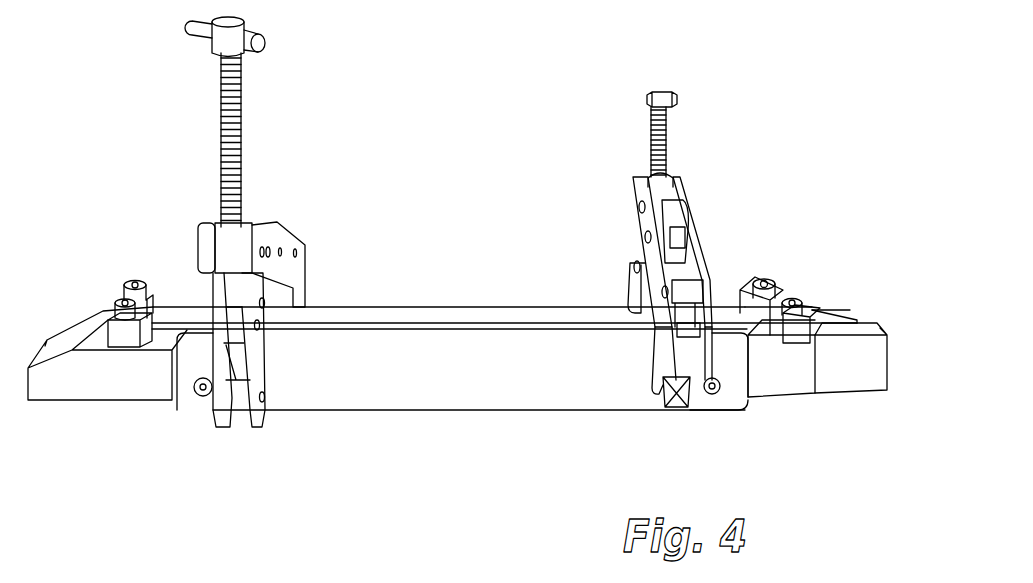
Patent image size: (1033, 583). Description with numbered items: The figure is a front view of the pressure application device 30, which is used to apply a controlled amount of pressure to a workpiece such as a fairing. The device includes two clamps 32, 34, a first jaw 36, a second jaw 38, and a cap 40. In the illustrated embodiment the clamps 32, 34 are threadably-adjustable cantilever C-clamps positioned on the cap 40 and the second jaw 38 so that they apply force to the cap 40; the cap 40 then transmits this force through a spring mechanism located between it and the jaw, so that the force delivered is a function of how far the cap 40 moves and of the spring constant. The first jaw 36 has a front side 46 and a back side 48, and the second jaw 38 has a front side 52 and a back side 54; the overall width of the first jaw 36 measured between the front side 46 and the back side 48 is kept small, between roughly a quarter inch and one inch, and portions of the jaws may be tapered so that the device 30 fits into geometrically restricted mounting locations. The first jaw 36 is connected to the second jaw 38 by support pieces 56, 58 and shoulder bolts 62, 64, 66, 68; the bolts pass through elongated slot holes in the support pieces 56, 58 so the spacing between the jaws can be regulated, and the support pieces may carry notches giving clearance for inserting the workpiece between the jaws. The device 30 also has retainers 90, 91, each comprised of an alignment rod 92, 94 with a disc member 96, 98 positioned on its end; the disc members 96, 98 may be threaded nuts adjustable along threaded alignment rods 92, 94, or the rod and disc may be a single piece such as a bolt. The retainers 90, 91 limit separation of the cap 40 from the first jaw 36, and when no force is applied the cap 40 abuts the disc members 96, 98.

The pressure application device 30 is at (320, 457).
The clamp 32 is at (250, 228).
The clamp 34 is at (638, 176).
The first jaw 36 is at (862, 353).
The second jaw 38 is at (820, 300).
The cap 40 is at (447, 383).
The front side 46 is at (70, 333).
The back side 48 is at (772, 390).
The front side 52 is at (856, 323).
The back side 54 is at (552, 307).
The support piece 56 is at (123, 345).
The support piece 58 is at (740, 293).
The shoulder bolt 62 is at (136, 283).
The shoulder bolt 64 is at (117, 305).
The shoulder bolt 66 is at (764, 280).
The shoulder bolt 68 is at (793, 306).
The retainer 90 is at (213, 412).
The retainer 91 is at (720, 403).
The alignment rod 92 is at (195, 392).
The alignment rod 94 is at (712, 396).
The disc member 96 is at (203, 397).
The disc member 98 is at (733, 392).